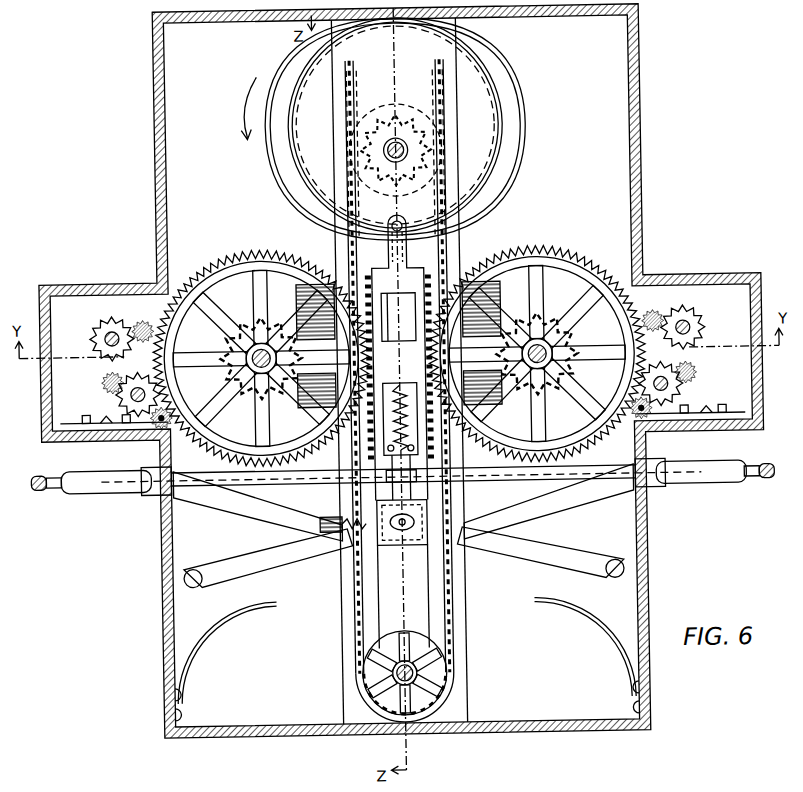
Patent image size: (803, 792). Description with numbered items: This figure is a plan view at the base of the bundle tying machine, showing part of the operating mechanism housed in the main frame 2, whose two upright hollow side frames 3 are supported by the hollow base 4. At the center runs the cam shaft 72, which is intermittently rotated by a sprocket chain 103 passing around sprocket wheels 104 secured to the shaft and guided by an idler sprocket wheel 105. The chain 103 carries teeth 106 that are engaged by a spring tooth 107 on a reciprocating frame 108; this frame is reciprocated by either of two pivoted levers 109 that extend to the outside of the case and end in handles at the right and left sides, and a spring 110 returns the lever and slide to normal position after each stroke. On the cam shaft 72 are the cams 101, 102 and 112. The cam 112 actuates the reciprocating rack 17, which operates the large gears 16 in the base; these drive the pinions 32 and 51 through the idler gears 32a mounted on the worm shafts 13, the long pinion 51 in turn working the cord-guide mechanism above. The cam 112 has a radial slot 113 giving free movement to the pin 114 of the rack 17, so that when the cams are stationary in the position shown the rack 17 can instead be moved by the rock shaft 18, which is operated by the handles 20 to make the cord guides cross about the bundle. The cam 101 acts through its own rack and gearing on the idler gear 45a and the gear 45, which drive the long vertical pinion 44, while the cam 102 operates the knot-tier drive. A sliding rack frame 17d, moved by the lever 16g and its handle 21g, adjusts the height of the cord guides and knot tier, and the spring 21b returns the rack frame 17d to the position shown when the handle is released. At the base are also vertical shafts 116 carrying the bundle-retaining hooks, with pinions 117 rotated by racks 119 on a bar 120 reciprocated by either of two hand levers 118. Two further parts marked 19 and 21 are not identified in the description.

The main frame 2 is at (401, 371).
The upright hollow side frames 3 is at (398, 382).
The hollow base 4 is at (532, 635).
The worm shafts 13 is at (222, 372).
The large gears 16 is at (399, 356).
The lever 16g is at (257, 506).
The reciprocating rack 17 is at (400, 387).
The sliding rack frame 17d is at (484, 404).
The rock shaft 18 is at (300, 447).
The rod 19 is at (418, 467).
The handles 20 is at (405, 485).
The spring 21 is at (400, 409).
The handle 21g is at (219, 542).
The spring 21b is at (541, 571).
The pinion 32 is at (106, 375).
The idler gear 32a is at (640, 388).
The vertical pinion 44 is at (106, 334).
The gear 45 is at (392, 336).
The idler gear 45a is at (660, 309).
The long pinion 51 is at (108, 382).
The cam shaft 72 is at (402, 146).
The cam 101 is at (522, 194).
The cam 102 is at (500, 112).
The sprocket chain 103 is at (446, 647).
The sprocket wheels 104 is at (396, 118).
The idler sprocket wheel 105 is at (404, 640).
The chain teeth 106 is at (452, 617).
The spring tooth 107 is at (345, 536).
The reciprocating frame 108 is at (402, 536).
The pivoted levers 109 is at (491, 365).
The spring 110 is at (407, 658).
The cam 112 is at (478, 58).
The radial slot 113 is at (403, 252).
The pin 114 is at (396, 215).
The vertical shafts 116 is at (158, 424).
The pinions 117 is at (650, 428).
The hand levers 118 is at (716, 426).
The racks 119 is at (672, 426).
The bar 120 is at (92, 426).